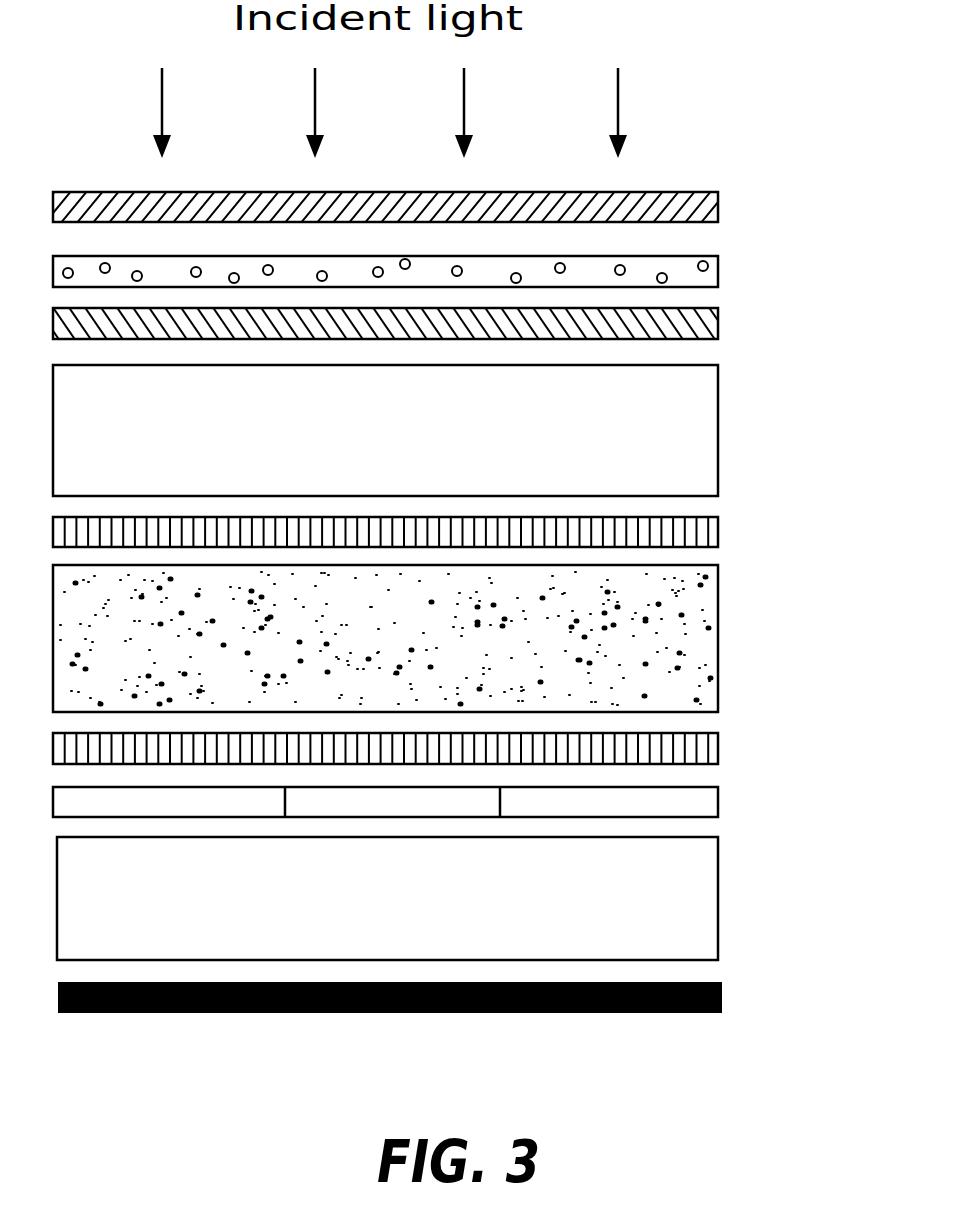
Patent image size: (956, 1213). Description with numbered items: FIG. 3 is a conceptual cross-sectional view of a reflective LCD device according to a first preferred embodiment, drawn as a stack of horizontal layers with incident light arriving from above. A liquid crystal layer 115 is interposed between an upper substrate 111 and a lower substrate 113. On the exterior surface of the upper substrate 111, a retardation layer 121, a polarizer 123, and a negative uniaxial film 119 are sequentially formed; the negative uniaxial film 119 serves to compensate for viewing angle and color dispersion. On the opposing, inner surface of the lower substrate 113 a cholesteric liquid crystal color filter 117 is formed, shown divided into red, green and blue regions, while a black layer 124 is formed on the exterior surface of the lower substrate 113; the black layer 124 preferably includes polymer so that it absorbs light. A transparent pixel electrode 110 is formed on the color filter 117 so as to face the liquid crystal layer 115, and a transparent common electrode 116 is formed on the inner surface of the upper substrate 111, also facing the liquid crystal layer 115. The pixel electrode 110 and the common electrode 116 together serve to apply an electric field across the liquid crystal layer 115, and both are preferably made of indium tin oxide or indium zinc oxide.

The polarizer 123 is at (718, 205).
The retardation layer 121 is at (718, 270).
The negative uniaxial film 119 is at (718, 323).
The upper substrate 111 is at (710, 437).
The transparent common electrode 116 is at (718, 530).
The liquid crystal layer 115 is at (712, 642).
The transparent pixel electrode 110 is at (718, 746).
The cholesteric liquid crystal color filter 117 is at (714, 798).
The lower substrate 113 is at (712, 907).
The black layer 124 is at (722, 997).